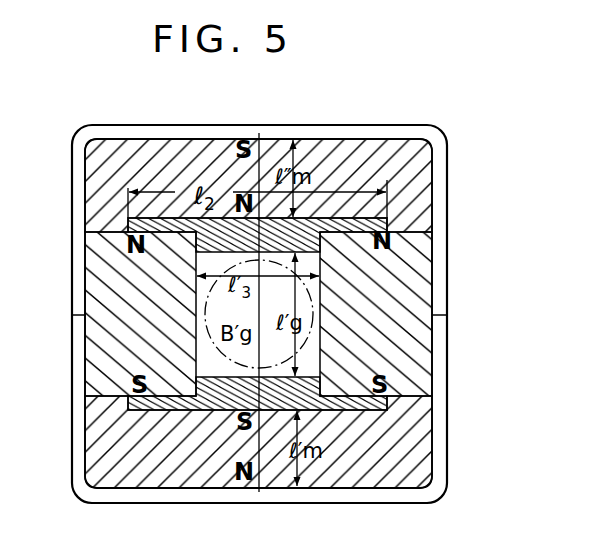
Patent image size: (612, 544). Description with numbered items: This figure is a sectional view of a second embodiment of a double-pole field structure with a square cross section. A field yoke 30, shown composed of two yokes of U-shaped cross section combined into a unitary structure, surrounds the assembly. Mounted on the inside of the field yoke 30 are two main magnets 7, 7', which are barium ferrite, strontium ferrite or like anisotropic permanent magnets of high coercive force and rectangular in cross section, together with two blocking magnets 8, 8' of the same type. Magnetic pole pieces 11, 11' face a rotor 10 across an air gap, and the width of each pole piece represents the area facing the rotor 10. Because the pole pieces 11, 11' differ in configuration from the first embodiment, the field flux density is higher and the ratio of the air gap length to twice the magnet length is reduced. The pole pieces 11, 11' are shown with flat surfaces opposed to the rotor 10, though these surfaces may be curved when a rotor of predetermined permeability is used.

The main magnet 7 is at (258, 160).
The main magnet 7' is at (292, 442).
The blocking magnet 8 is at (405, 314).
The blocking magnet 8' is at (117, 314).
The rotor 10 is at (203, 358).
The magnetic pole piece 11 is at (257, 208).
The magnetic pole piece 11' is at (257, 418).
The field yoke 30 is at (447, 287).